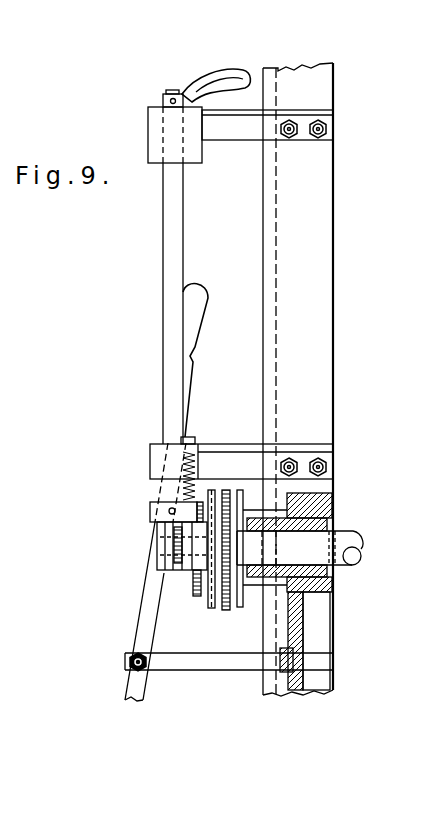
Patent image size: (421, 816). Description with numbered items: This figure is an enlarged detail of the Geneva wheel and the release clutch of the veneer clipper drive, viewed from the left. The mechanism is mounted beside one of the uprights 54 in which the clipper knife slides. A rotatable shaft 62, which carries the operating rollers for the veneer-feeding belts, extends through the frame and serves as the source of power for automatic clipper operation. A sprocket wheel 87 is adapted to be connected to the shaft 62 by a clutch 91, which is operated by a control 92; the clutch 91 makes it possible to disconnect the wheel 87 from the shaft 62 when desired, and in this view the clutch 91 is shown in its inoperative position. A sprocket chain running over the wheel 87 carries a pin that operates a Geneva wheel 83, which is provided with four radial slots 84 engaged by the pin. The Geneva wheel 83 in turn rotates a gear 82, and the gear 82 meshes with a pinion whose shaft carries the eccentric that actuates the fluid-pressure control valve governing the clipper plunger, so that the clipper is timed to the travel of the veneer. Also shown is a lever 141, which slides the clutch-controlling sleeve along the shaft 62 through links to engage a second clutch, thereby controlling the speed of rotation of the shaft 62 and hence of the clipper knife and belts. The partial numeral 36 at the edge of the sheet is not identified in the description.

The uprights 54 is at (303, 220).
The control 92 is at (215, 80).
The radial slots 84 is at (238, 490).
The rotatable shaft 62 is at (357, 532).
The clutch 91 is at (166, 572).
The gear 82 is at (193, 592).
The Geneva wheel 83 is at (212, 602).
The sprocket wheel 87 is at (217, 606).
The lever 141 is at (143, 613).
The member 36 is at (11, 460).